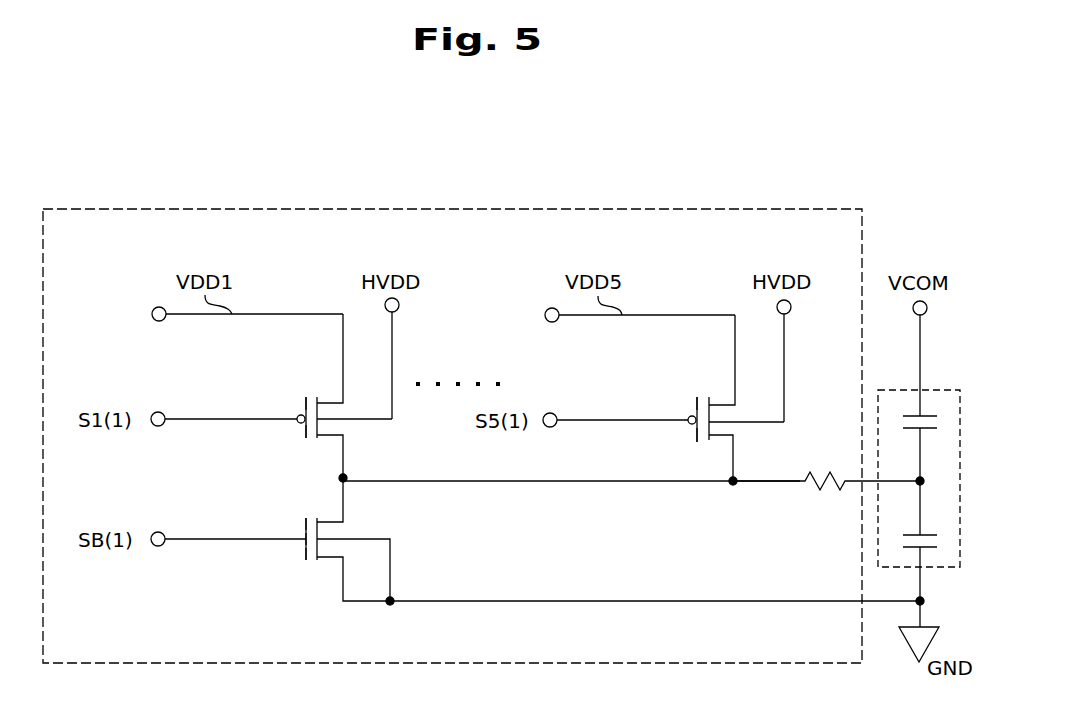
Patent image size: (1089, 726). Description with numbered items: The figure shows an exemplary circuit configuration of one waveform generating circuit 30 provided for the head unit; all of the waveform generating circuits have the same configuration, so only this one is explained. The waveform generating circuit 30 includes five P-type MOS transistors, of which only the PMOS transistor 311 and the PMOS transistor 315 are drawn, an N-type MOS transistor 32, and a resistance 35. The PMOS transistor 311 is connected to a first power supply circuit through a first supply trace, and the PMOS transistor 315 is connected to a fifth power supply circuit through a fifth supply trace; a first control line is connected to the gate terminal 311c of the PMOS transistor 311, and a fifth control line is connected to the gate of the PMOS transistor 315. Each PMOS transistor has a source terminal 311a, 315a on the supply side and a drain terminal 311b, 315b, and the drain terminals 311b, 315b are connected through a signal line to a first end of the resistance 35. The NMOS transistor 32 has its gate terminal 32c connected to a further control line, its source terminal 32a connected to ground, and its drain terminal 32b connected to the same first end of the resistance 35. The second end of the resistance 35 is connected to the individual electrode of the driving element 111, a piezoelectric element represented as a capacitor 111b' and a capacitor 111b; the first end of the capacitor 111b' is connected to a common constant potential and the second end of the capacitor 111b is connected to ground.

The waveform generating circuit 30 is at (253, 209).
The PMOS transistor 311 is at (319, 384).
The source terminal of PMOS transistor 311a is at (306, 398).
The drain terminal of PMOS transistor 311b is at (305, 438).
The gate terminal of PMOS transistor 311c is at (298, 415).
The NMOS transistor 32 is at (307, 574).
The source terminal of NMOS transistor 32a is at (303, 562).
The drain terminal of NMOS transistor 32b is at (305, 518).
The gate terminal of NMOS transistor 32c is at (303, 547).
The PMOS transistor 315 is at (712, 384).
The source terminal of PMOS transistor 315a is at (697, 398).
The drain terminal of PMOS transistor 315b is at (697, 442).
The resistance 35 is at (823, 472).
The driving element 111 is at (961, 470).
The capacitor 111b is at (979, 538).
The capacitor 111b' is at (982, 416).